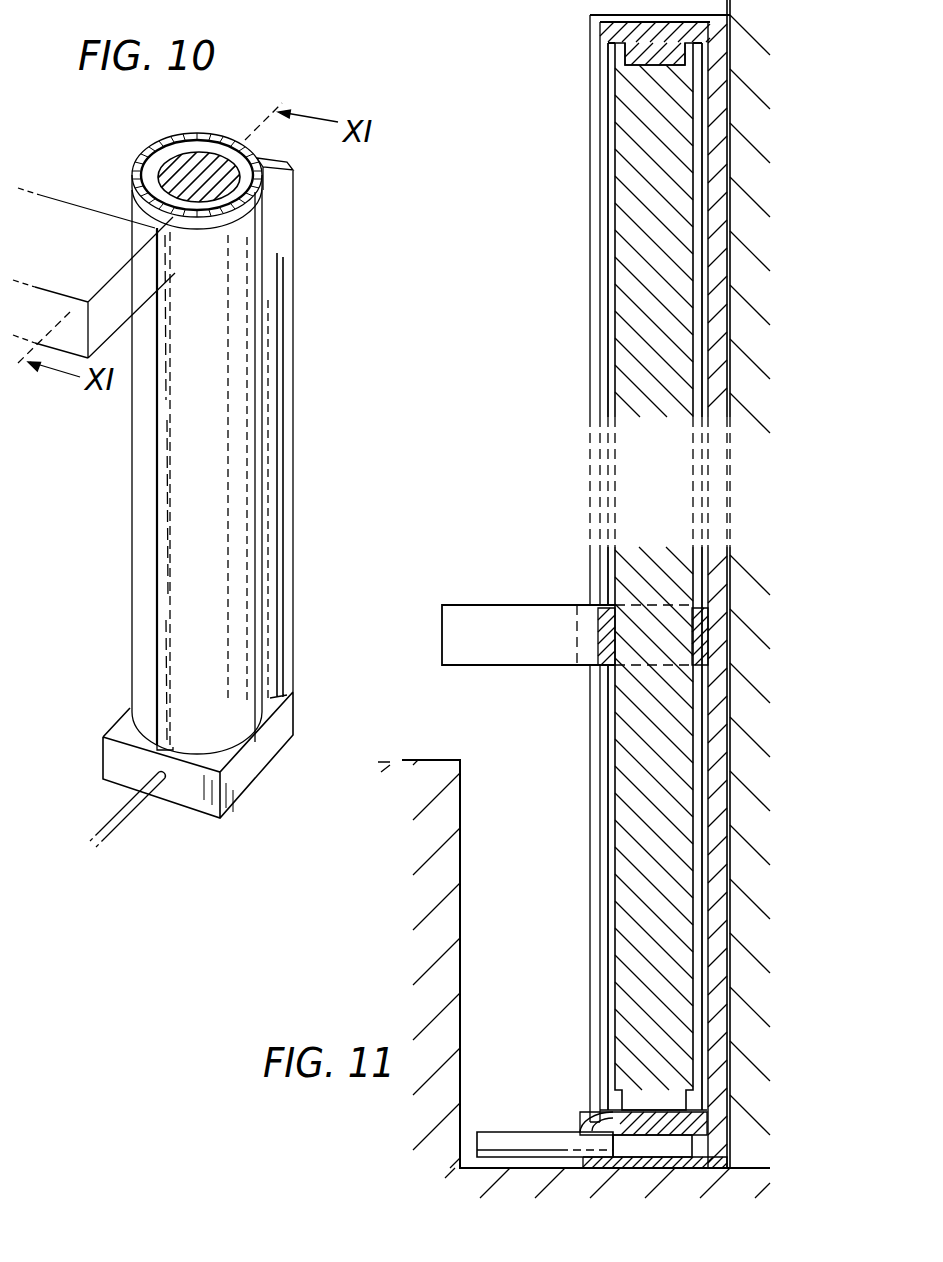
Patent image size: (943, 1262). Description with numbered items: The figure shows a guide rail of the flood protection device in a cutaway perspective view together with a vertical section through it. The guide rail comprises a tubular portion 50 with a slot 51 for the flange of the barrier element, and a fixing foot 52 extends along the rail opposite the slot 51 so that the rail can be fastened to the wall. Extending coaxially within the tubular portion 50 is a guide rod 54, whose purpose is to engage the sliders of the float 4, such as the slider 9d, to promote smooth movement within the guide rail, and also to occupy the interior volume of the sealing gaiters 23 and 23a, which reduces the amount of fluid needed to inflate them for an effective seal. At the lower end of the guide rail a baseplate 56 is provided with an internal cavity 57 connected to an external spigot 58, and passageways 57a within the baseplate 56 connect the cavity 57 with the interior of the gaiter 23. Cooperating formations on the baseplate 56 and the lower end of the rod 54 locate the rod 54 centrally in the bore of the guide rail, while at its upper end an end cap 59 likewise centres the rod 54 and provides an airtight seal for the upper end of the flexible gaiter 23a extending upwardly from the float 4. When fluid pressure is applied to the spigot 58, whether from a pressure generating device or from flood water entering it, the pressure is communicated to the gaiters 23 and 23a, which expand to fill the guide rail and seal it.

In FIG. 10, the float 4 is at (32, 260).
In FIG. 11, the float 4 is at (508, 618).
In FIG. 11, the slider 9d is at (606, 625).
In FIG. 10, the sealing gaiter 23 is at (167, 603).
In FIG. 10, the flexible gaiter 23a is at (232, 223).
In FIG. 11, the flexible gaiter 23a is at (703, 267).
In FIG. 10, the tubular portion 50 is at (213, 518).
In FIG. 10, the slot 51 is at (160, 500).
In FIG. 10, the fixing foot 52 is at (282, 445).
In FIG. 10, the guide rod 54 is at (163, 162).
In FIG. 11, the guide rod 54 is at (650, 765).
In FIG. 10, the baseplate 56 is at (118, 765).
In FIG. 11, the baseplate 56 is at (710, 1138).
In FIG. 11, the internal cavity 57 is at (680, 1147).
In FIG. 11, the passageways 57a is at (580, 1132).
In FIG. 10, the spigot 58 is at (120, 822).
In FIG. 11, the spigot 58 is at (502, 1142).
In FIG. 11, the end cap 59 is at (655, 48).